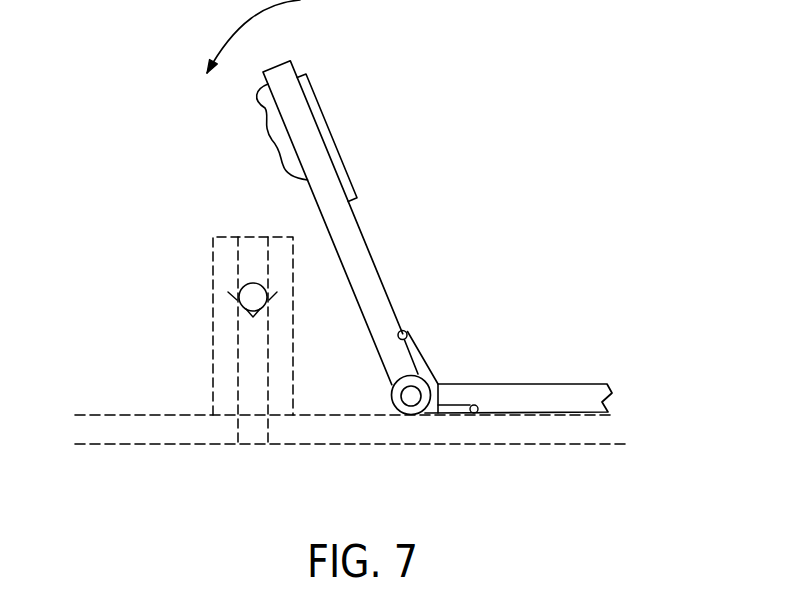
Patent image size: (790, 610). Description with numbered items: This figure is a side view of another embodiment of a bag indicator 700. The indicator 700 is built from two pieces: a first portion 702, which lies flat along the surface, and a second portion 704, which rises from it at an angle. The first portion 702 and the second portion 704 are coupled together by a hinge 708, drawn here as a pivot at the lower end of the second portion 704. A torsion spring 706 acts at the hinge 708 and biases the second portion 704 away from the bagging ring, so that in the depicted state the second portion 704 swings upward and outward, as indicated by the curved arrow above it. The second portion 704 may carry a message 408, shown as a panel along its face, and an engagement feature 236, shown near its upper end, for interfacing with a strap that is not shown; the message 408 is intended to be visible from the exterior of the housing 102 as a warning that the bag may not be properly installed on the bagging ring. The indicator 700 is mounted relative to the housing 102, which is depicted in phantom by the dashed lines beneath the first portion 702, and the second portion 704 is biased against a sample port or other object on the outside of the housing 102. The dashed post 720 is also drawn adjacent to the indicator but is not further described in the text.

The indicator 700 is at (528, 122).
The second portion 704 is at (368, 300).
The message 408 is at (325, 118).
The engagement feature 236 is at (267, 118).
The torsion spring 706 is at (418, 357).
The hinge 708 is at (408, 395).
The first portion 702 is at (565, 395).
The mounting post 720 is at (213, 337).
The housing 102 is at (178, 433).